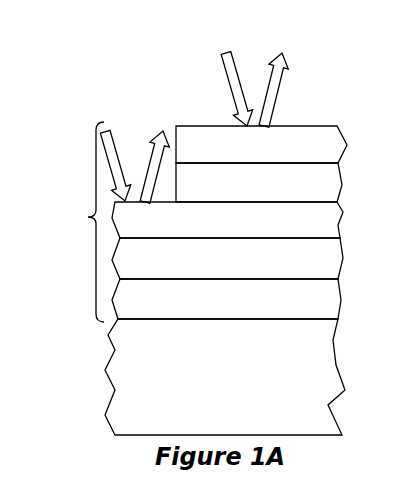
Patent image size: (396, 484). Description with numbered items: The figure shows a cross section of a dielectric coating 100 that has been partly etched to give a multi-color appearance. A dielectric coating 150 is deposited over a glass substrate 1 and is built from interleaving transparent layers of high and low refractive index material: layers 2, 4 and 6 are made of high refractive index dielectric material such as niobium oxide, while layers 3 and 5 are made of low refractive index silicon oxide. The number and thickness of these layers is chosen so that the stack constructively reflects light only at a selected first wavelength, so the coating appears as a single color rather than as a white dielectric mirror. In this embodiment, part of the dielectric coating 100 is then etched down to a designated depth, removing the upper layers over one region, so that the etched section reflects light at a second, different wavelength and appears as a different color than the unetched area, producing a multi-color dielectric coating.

The glass substrate 1 is at (328, 373).
The high refractive index layer 2 is at (326, 305).
The low refractive index layer 3 is at (327, 265).
The high refractive index layer 4 is at (326, 226).
The low refractive index layer 5 is at (328, 188).
The high refractive index layer 6 is at (332, 148).
The dielectric coating 100 is at (205, 233).
The dielectric coating 150 is at (205, 222).